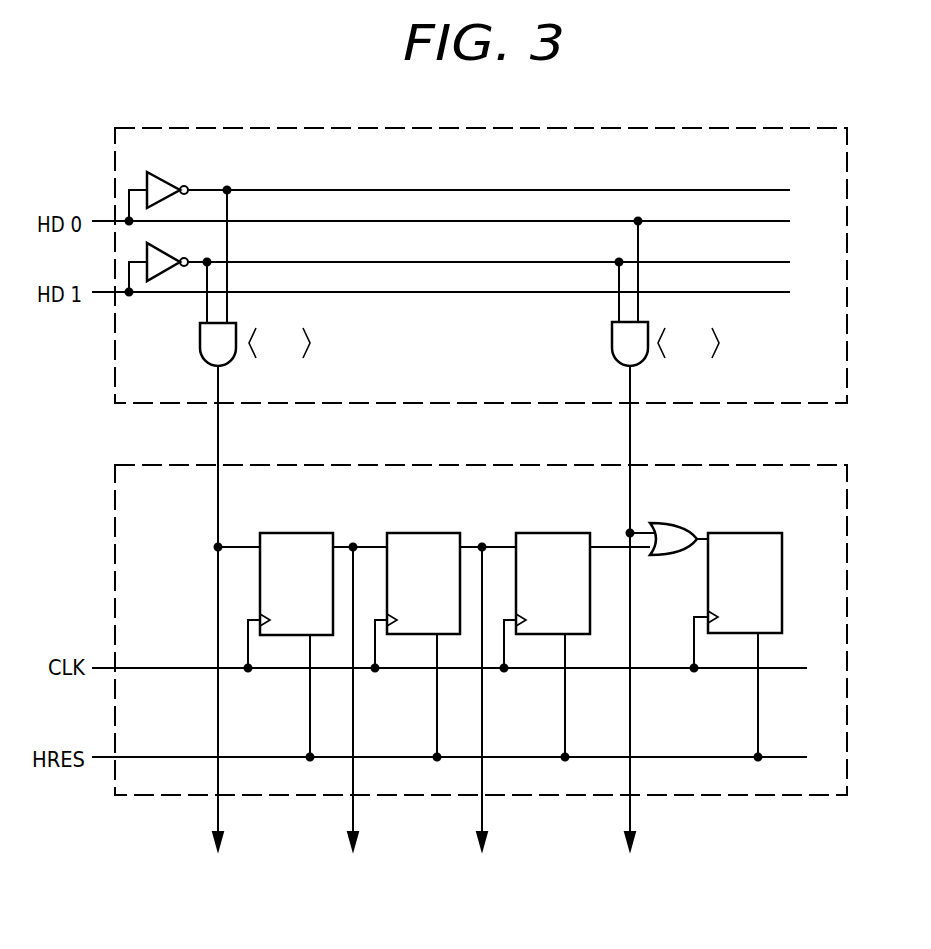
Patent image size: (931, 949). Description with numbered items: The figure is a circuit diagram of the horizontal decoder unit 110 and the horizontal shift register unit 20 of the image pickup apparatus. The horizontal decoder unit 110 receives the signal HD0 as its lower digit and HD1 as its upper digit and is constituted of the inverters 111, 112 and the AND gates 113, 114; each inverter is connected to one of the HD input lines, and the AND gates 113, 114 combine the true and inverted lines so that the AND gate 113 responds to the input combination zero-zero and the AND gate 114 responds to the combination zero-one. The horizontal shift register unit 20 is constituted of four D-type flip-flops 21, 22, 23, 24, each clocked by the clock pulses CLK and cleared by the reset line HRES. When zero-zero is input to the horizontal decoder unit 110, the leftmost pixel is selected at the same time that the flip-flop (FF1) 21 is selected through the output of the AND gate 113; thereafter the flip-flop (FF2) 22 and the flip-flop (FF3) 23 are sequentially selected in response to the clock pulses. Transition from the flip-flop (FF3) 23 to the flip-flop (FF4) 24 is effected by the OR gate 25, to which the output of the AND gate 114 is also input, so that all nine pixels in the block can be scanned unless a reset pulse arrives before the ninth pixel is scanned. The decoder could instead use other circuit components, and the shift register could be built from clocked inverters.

The horizontal decoder unit 110 is at (476, 127).
The inverter 111 is at (162, 183).
The inverter 112 is at (162, 255).
The AND gate 113 is at (200, 344).
The AND gate 114 is at (611, 344).
The horizontal shift register unit 20 is at (433, 465).
The flip-flop (FF1) 21 is at (290, 533).
The flip-flop (FF2) 22 is at (415, 533).
The flip-flop (FF3) 23 is at (546, 533).
The flip-flop (FF4) 24 is at (745, 533).
The OR gate 25 is at (664, 523).